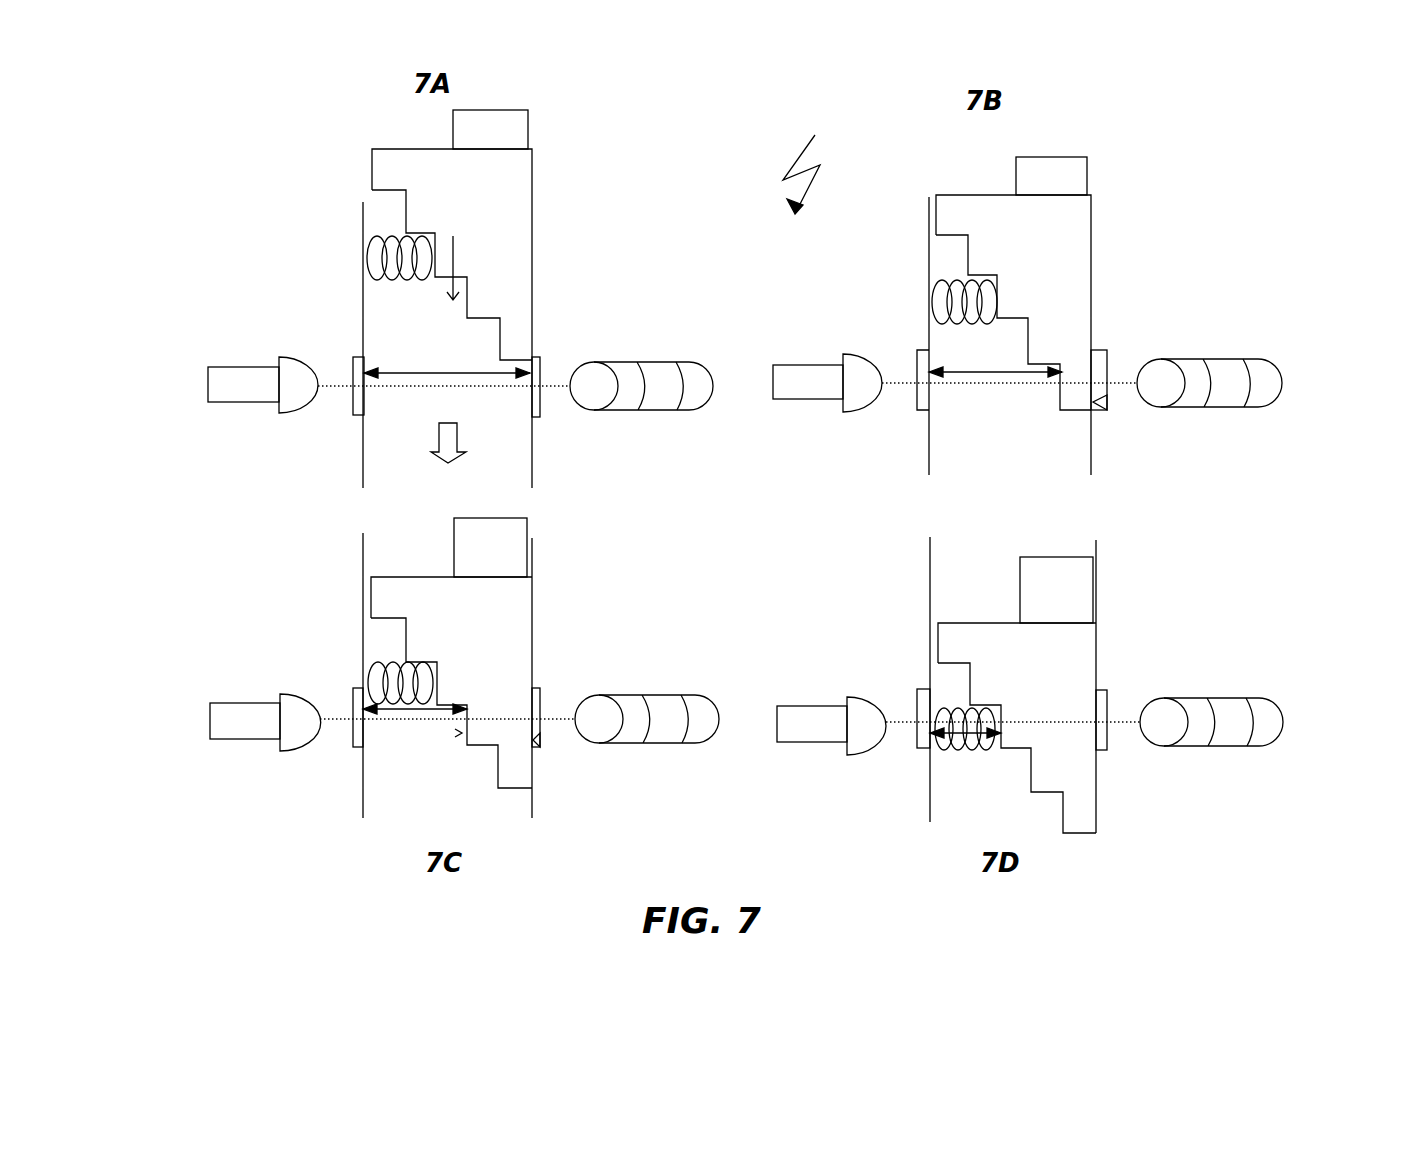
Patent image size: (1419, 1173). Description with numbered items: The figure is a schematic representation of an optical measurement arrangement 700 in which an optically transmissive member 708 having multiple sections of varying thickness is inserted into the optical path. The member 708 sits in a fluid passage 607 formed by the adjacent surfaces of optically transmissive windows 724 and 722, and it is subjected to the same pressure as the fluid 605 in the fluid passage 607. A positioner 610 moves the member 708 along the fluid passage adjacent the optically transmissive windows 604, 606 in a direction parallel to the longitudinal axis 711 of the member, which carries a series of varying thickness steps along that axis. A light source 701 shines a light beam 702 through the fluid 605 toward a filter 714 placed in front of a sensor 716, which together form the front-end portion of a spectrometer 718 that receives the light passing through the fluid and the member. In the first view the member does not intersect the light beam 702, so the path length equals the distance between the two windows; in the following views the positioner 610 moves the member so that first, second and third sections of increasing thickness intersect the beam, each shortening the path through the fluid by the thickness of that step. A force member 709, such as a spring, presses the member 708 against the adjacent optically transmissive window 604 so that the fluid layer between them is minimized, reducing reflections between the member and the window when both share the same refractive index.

The optical monitoring system 700 is at (810, 162).
The light source 701 is at (266, 395).
The light beam 702 is at (335, 383).
The optically transmissive window 604 is at (536, 368).
The fluid 605 is at (451, 428).
The optically transmissive window 606 is at (355, 358).
The fluid passage 607 is at (400, 376).
The positioner 610 is at (517, 118).
The optically transmissive member 708 is at (518, 173).
The force member 709 is at (972, 725).
The longitudinal axis 711 is at (455, 254).
The filter 714 is at (1188, 705).
The sensor 716 is at (1222, 705).
The spectrometer 718 is at (1290, 690).
The optically transmissive window 722 is at (536, 705).
The optically transmissive window 724 is at (357, 696).